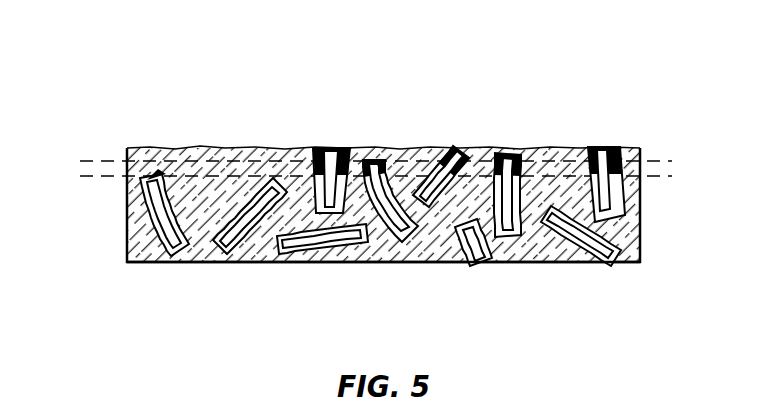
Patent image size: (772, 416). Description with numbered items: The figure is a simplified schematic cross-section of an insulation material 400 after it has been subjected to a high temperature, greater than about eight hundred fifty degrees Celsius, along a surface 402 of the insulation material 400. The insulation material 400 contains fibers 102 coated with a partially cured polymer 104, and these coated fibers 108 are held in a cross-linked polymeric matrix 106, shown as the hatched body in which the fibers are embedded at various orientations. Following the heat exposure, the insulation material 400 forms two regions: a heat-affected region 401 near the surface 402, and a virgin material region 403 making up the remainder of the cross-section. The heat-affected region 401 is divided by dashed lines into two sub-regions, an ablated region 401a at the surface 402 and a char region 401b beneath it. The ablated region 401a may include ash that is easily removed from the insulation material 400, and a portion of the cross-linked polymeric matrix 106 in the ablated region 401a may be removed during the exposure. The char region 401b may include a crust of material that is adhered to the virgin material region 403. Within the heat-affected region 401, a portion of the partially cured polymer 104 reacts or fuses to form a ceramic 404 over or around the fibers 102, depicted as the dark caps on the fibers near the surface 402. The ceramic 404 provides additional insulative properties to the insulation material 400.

The insulation material 400 is at (114, 77).
The surface 402 is at (200, 147).
The ceramic 404 is at (318, 148).
The heat-affected region 401 is at (390, 150).
The ablated region 401a is at (640, 150).
The char region 401b is at (640, 166).
The virgin material region 403 is at (80, 178).
The cross-linked polymeric matrix 106 is at (625, 232).
The fibers 102 is at (479, 279).
The partially cured polymer 104 is at (492, 262).
The coated fibers 108 is at (383, 292).